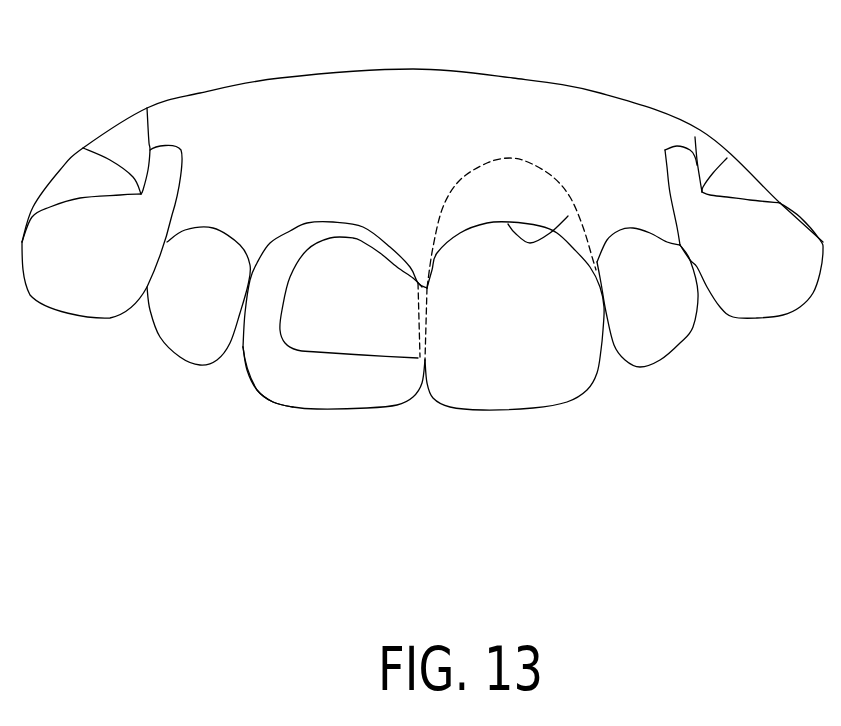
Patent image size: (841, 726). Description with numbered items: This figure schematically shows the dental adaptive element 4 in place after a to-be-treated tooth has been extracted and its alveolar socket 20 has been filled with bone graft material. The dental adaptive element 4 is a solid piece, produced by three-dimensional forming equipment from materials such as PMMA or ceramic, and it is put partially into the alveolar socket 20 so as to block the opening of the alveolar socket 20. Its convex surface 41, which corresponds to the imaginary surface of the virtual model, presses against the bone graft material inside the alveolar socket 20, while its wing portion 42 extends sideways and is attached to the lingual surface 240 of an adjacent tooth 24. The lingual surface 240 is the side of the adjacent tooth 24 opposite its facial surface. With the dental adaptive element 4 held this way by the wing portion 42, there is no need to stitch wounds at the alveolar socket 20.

The dental adaptive element 4 is at (543, 387).
The alveolar socket 20 is at (568, 216).
The adjacent tooth 24 is at (383, 408).
The convex surface 41 is at (510, 157).
The wing portion 42 is at (345, 327).
The lingual surface 240 is at (268, 370).